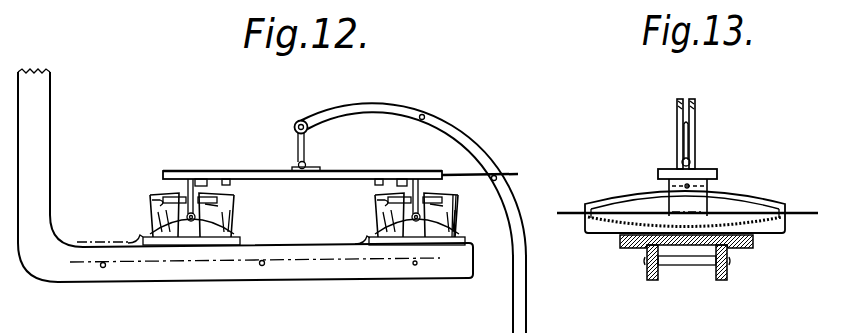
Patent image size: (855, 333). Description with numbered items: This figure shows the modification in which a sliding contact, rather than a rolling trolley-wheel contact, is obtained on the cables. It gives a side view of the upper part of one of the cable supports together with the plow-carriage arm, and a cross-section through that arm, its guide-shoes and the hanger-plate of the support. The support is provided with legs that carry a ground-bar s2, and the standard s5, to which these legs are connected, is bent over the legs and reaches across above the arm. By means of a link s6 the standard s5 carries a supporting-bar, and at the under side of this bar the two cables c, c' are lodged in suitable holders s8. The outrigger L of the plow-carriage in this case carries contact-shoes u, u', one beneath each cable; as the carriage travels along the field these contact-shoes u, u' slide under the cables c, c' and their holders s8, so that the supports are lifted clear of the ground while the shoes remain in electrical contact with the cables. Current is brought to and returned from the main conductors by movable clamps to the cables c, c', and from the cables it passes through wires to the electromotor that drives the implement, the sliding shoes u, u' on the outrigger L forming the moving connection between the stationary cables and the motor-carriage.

In FIG. 12, the outrigger L is at (245, 175).
In FIG. 12, the ground-bar s2 is at (133, 188).
In FIG. 13, the ground-bar s2 is at (710, 175).
In FIG. 12, the standard s5 is at (520, 302).
In FIG. 13, the standard s5 is at (695, 112).
In FIG. 12, the link s6 is at (305, 149).
In FIG. 13, the link s6 is at (688, 148).
In FIG. 12, the holders s8 is at (442, 173).
In FIG. 13, the holders s8 is at (697, 200).
In FIG. 12, the contact-shoe u is at (198, 219).
In FIG. 12, the contact-shoe u' is at (424, 219).
In FIG. 12, the cable c is at (187, 227).
In FIG. 13, the cable c is at (687, 235).
In FIG. 12, the cable c' is at (406, 227).